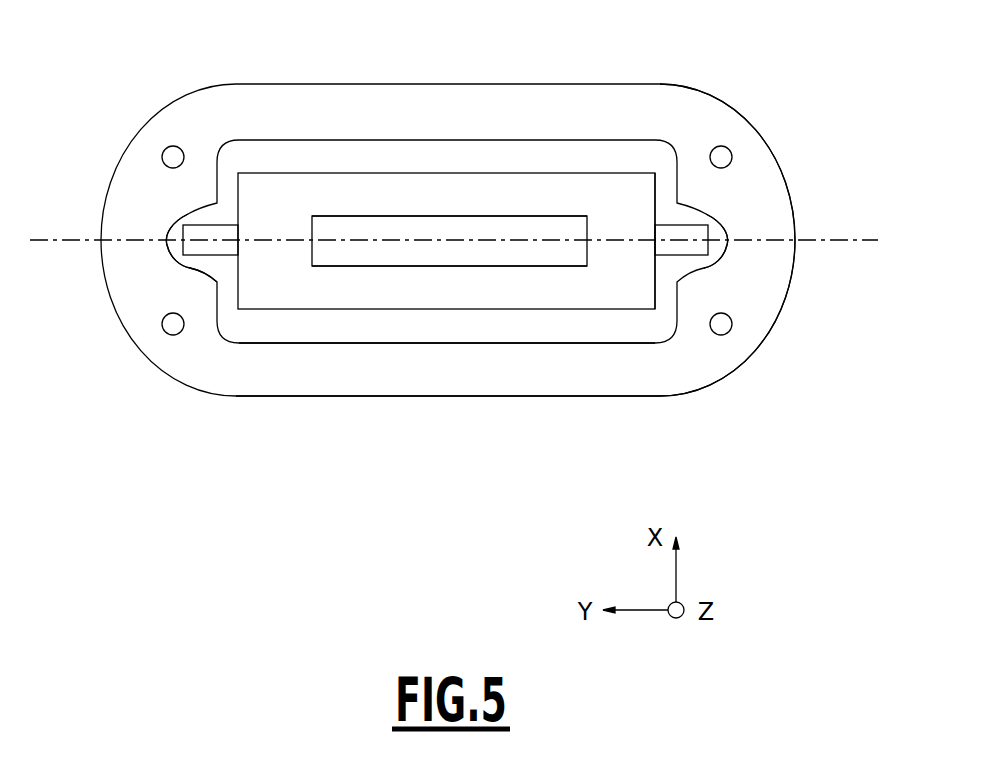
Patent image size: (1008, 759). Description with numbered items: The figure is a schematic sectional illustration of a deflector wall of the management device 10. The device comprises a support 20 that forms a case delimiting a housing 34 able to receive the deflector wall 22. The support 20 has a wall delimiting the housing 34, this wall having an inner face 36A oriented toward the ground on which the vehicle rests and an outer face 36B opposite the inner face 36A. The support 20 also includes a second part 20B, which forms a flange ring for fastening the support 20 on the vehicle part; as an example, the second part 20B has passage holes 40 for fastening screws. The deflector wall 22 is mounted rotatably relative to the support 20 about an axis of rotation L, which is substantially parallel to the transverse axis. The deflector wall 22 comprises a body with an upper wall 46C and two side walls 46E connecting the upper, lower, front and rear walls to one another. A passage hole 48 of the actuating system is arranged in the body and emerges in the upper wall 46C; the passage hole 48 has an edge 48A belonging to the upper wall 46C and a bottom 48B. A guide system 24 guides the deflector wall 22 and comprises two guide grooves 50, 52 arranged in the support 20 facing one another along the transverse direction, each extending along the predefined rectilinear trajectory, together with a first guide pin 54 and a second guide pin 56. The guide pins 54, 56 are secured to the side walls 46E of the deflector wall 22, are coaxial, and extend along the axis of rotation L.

The management device 10 is at (803, 473).
The support 20 is at (808, 298).
The second part 20B is at (289, 374).
The deflector wall 22 is at (565, 198).
The guide system 24 is at (195, 298).
The housing 34 is at (638, 326).
The inner face 36A is at (675, 303).
The outer face 36B is at (793, 212).
The passage holes 40 is at (164, 331).
The upper wall 46C is at (625, 195).
The side walls 46E is at (216, 280).
The passage hole 48 is at (472, 214).
The edge 48A is at (390, 213).
The bottom 48B is at (442, 250).
The guide groove 50 is at (730, 250).
The guide groove 52 is at (168, 250).
The first guide pin 54 is at (687, 245).
The second guide pin 56 is at (213, 237).